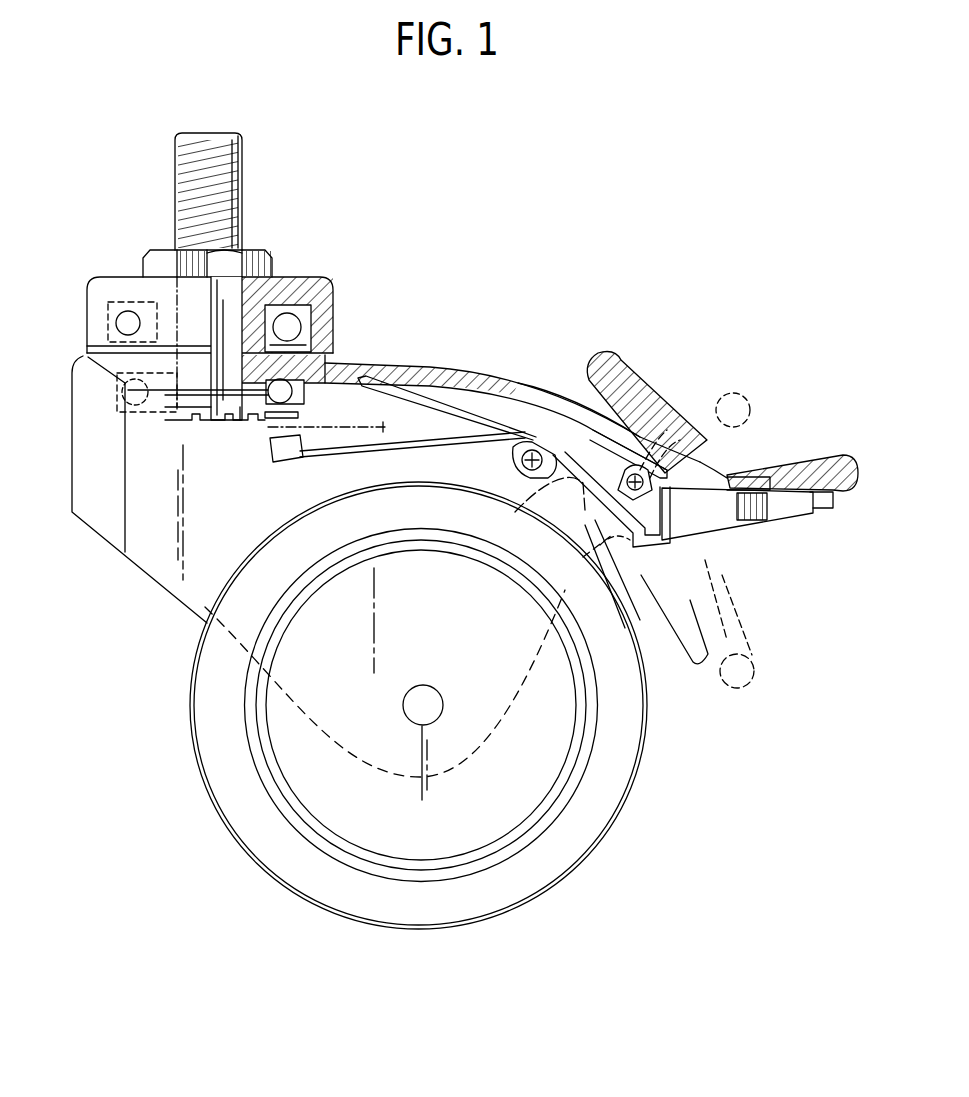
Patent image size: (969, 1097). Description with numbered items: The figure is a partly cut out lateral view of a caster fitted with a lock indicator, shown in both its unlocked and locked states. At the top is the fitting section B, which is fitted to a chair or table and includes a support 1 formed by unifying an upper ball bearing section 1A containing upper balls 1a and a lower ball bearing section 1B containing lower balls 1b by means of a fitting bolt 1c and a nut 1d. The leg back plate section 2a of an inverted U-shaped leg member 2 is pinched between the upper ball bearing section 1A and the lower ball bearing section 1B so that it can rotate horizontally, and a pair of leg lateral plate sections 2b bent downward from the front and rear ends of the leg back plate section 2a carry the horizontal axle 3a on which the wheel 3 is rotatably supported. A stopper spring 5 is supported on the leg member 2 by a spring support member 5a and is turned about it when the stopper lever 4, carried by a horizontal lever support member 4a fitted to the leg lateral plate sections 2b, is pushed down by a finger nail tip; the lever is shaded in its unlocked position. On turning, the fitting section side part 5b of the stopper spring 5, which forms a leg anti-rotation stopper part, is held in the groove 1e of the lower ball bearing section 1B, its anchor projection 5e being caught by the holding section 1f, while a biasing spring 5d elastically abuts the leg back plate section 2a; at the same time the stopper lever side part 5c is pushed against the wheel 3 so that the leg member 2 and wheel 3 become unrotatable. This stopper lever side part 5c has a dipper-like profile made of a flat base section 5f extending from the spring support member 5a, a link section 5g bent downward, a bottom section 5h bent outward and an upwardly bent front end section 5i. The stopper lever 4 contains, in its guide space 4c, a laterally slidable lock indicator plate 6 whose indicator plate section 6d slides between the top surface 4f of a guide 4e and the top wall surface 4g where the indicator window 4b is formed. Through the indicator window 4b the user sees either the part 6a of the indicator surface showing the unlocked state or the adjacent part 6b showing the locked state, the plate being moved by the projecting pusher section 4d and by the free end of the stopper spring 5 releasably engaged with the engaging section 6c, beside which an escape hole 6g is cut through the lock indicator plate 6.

The support 1 is at (305, 277).
The upper ball bearing section 1A is at (95, 283).
The lower ball bearing section 1B is at (80, 357).
The upper balls 1a is at (300, 322).
The lower balls 1b is at (300, 364).
The fitting bolt 1c is at (177, 185).
The nut 1d is at (160, 265).
The groove 1e is at (300, 395).
The holding section 1f is at (255, 425).
The leg member 2 is at (512, 381).
The leg back plate section 2a is at (380, 363).
The leg lateral plate sections 2b is at (468, 392).
The wheel 3 is at (192, 662).
The horizontal axle 3a is at (413, 705).
The stopper lever 4 is at (703, 455).
The lever support member 4a is at (628, 476).
The indicator window 4b is at (737, 462).
The guide space 4c is at (790, 522).
The projecting pusher section 4d is at (600, 555).
The guide 4e is at (770, 508).
The top surface 4f is at (775, 478).
The top wall surface 4g is at (800, 505).
The stopper spring 5 is at (491, 492).
The spring support member 5a is at (520, 460).
The fitting section side part 5b is at (345, 445).
The stopper lever side part 5c is at (535, 492).
The biasing spring 5d is at (405, 380).
The anchor projection 5e is at (272, 447).
The base section 5f is at (580, 466).
The link section 5g is at (615, 580).
The bottom section 5h is at (637, 605).
The front end section 5i is at (705, 480).
The lock indicator plate 6 is at (665, 526).
The part of the lock indicator surface indicating the unlocked state 6a is at (748, 485).
The part of the lock indicator surface indicating the locked state 6b is at (655, 470).
The engaging section 6c is at (700, 548).
The indicator plate section 6d is at (718, 505).
The escape hole 6g is at (595, 540).
The fitting section B is at (215, 132).